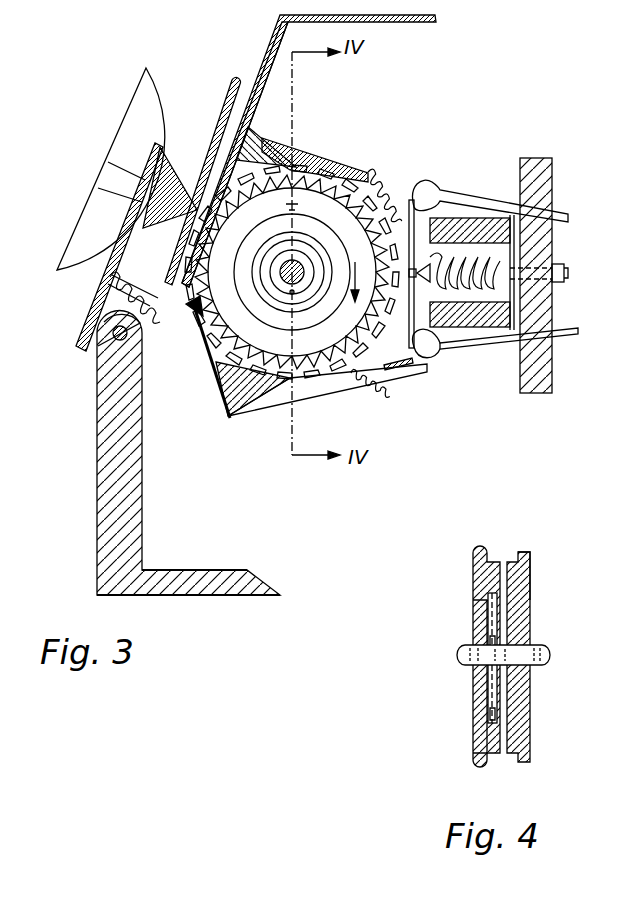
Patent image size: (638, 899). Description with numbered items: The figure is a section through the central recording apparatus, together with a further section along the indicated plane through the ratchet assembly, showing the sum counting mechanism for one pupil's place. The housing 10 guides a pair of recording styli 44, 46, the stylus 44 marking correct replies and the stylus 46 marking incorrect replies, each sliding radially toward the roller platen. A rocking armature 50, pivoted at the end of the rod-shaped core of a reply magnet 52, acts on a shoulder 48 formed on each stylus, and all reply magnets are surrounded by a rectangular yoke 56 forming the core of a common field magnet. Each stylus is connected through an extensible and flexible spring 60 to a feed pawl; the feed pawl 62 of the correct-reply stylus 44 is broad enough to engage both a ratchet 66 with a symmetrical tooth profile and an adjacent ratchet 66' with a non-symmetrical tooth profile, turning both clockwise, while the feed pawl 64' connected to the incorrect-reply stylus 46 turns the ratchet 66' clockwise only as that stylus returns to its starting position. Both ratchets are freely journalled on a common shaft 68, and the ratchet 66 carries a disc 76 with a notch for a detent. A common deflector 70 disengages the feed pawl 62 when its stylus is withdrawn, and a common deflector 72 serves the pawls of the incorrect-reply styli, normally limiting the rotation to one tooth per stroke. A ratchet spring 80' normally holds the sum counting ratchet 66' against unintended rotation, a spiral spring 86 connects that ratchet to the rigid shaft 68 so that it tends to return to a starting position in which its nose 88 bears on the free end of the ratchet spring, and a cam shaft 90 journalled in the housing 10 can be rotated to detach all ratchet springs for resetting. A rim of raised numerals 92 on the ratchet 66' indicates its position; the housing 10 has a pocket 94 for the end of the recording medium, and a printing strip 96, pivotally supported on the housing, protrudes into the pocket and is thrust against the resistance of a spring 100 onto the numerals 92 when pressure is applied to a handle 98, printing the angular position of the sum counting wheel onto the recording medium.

In FIG. 3, the housing 10 is at (107, 509).
In FIG. 3, the recording stylus 44 is at (478, 201).
In FIG. 3, the recording stylus 46 is at (483, 348).
In FIG. 3, the shoulder 48 is at (437, 377).
In FIG. 3, the armature 50 is at (410, 350).
In FIG. 3, the reply magnet 52 is at (487, 276).
In FIG. 3, the yoke 56 is at (487, 231).
In FIG. 3, the spring 60 is at (385, 176).
In FIG. 3, the feed pawl 62 is at (315, 152).
In FIG. 3, the feed pawl 64' is at (327, 394).
In FIG. 4, the ratchet 66 is at (544, 657).
In FIG. 3, the ratchet 66' is at (292, 252).
In FIG. 4, the ratchet 66' is at (446, 676).
In FIG. 4, the shaft 68 is at (462, 648).
In FIG. 3, the deflector 70 is at (253, 132).
In FIG. 3, the deflector 72 is at (242, 408).
In FIG. 4, the disc 76 is at (528, 553).
In FIG. 3, the ratchet spring 80' is at (190, 336).
In FIG. 3, the spiral spring 86 is at (337, 320).
In FIG. 4, the spiral spring 86 is at (480, 612).
In FIG. 3, the nose 88 is at (217, 182).
In FIG. 3, the cam shaft 90 is at (220, 388).
In FIG. 3, the raised numerals 92 is at (410, 200).
In FIG. 4, the raised numerals 92 is at (480, 550).
In FIG. 3, the pocket 94 is at (236, 82).
In FIG. 3, the printing strip 96 is at (170, 156).
In FIG. 3, the handle 98 is at (82, 113).
In FIG. 3, the spring 100 is at (112, 282).